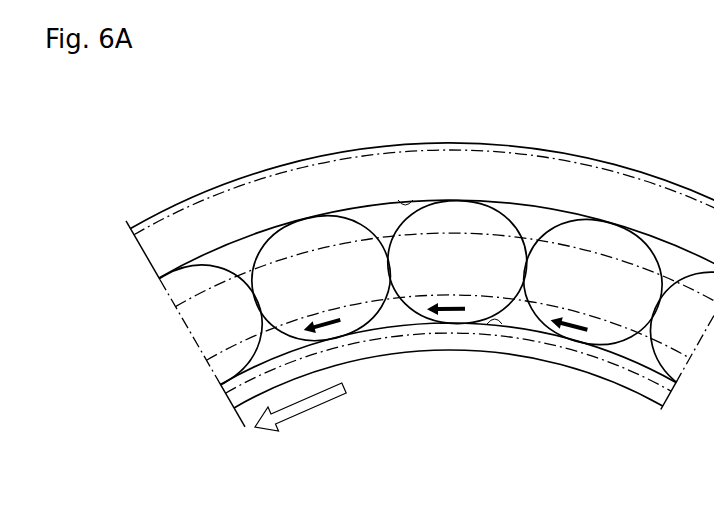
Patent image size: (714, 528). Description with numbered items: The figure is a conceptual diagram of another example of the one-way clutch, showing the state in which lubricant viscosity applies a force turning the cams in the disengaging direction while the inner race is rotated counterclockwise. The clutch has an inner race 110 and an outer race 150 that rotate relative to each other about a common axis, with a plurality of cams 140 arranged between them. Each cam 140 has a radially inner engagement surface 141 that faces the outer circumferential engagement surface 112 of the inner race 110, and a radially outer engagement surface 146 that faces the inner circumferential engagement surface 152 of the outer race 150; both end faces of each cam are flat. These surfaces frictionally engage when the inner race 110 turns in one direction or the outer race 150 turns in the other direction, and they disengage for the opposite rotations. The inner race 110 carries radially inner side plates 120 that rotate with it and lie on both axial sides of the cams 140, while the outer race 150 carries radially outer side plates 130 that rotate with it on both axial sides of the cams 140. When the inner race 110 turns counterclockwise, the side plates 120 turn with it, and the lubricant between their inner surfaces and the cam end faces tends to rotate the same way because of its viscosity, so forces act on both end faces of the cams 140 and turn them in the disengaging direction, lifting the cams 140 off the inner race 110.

The inner race 110 is at (373, 358).
The outer circumferential engagement surface 112 is at (495, 318).
The radially inner side plates 120 is at (612, 368).
The radially outer side plates 130 is at (645, 175).
The cam 140 is at (470, 217).
The radially inner engagement surface 141 is at (444, 327).
The radially outer engagement surface 146 is at (455, 200).
The outer race 150 is at (312, 155).
The inner circumferential engagement surface 152 is at (393, 202).